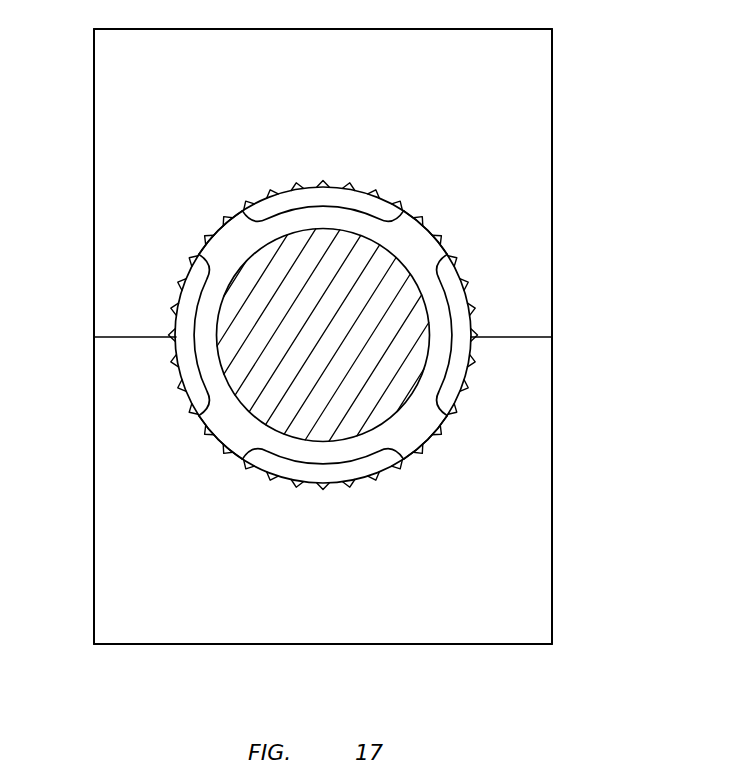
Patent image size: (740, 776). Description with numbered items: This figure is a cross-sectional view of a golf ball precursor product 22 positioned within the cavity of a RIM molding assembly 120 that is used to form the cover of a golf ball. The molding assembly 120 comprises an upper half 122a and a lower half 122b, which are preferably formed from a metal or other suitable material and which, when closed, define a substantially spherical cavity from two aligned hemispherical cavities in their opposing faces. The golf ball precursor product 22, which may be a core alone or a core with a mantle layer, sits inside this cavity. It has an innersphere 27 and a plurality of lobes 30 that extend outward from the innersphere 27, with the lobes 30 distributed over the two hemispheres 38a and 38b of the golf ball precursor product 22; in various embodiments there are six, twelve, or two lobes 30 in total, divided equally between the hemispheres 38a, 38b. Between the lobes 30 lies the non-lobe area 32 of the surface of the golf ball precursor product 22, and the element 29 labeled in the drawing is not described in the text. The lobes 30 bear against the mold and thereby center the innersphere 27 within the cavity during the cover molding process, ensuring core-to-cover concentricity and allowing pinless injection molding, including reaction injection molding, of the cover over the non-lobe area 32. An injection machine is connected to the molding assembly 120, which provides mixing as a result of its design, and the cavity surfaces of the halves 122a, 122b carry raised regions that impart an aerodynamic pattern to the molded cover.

The golf ball precursor product 22 is at (462, 316).
The innersphere 27 is at (380, 203).
The lower arcuate segment of collar 29 is at (350, 467).
The lobes 30 is at (427, 233).
The non-lobe area 32 is at (452, 364).
The hemisphere 38a is at (387, 285).
The hemisphere 38b is at (353, 390).
The RIM molding assembly 120 is at (563, 474).
The upper half 122a is at (517, 68).
The lower half 122b is at (498, 615).